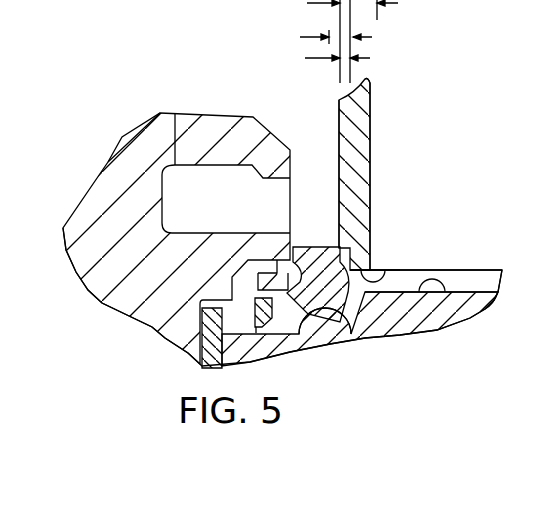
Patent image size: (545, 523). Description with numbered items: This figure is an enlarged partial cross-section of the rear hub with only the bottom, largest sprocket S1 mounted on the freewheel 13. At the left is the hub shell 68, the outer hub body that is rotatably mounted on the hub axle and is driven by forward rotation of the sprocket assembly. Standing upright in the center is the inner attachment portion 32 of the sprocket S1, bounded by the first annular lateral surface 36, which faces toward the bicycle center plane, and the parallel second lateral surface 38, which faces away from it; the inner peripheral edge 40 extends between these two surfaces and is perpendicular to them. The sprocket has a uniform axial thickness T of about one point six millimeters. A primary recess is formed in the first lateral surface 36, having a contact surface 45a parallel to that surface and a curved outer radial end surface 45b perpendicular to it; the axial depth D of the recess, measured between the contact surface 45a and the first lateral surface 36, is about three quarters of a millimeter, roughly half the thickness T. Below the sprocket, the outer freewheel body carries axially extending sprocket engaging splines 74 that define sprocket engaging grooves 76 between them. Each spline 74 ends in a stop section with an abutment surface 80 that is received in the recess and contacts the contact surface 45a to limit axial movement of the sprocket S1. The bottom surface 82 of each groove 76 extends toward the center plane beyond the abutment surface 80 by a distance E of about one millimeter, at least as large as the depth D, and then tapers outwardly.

The hub shell 68 is at (138, 120).
The inner attachment portion 32 is at (383, 155).
The first annular lateral surface 36 is at (338, 191).
The second lateral surface 38 is at (370, 190).
The sprocket S1 is at (398, 109).
The axial thickness T is at (307, 3).
The distance E is at (372, 37).
The axial depth D is at (305, 58).
The curved outer radial end surface 45b is at (320, 247).
The contact surface 45a is at (342, 317).
The bottom surface 82 is at (445, 293).
The inner peripheral edge 40 is at (396, 270).
The sprocket engaging spline 74 is at (470, 268).
The sprocket engaging groove 76 is at (483, 282).
The abutment surface 80 is at (387, 252).
The freewheel 13 is at (442, 223).